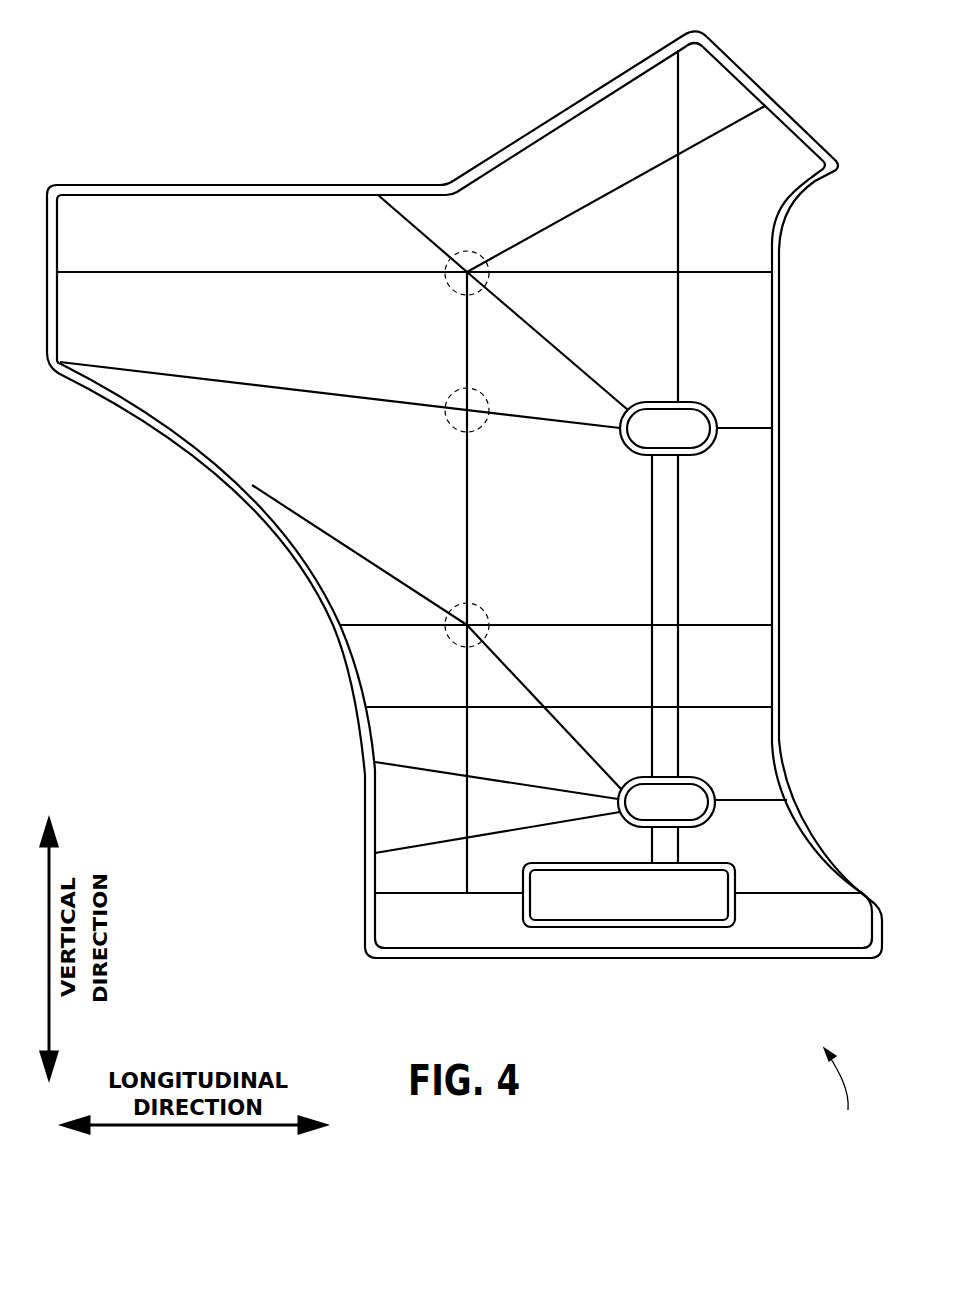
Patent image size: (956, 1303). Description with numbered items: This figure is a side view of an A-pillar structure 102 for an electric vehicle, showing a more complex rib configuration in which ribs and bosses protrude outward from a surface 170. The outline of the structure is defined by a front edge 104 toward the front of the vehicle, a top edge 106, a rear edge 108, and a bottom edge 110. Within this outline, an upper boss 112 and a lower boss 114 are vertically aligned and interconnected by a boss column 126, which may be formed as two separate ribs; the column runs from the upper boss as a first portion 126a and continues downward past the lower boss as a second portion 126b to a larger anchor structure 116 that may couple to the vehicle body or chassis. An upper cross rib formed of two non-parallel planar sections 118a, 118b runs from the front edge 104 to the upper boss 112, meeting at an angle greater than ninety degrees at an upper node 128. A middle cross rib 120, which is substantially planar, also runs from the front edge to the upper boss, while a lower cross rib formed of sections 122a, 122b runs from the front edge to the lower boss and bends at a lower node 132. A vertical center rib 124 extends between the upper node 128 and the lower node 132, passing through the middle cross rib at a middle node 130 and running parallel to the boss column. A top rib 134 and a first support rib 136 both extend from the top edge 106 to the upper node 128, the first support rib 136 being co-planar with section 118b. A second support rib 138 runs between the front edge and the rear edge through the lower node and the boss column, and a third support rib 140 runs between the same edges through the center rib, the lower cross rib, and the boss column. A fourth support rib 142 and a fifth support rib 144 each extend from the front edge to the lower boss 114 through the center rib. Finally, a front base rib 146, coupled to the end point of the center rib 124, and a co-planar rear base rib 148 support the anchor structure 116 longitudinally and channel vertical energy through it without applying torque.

The A-pillar structure 102 is at (844, 1093).
The front edge 104 is at (337, 640).
The top edge 106 is at (418, 185).
The rear edge 108 is at (786, 375).
The bottom edge 110 is at (655, 960).
The upper boss 112 is at (706, 402).
The lower boss 114 is at (708, 778).
The anchor structure 116 is at (735, 880).
The section of upper cross rib 118a is at (247, 271).
The section of upper cross rib 118b is at (533, 325).
The middle cross rib 120 is at (332, 392).
The section of lower cross rib 122a is at (350, 548).
The section of lower cross rib 122b is at (552, 700).
The center rib 124 is at (468, 518).
The boss column 126 is at (682, 212).
The boss column 126a is at (653, 557).
The boss column 126b is at (652, 836).
The upper node 128 is at (450, 285).
The middle node 130 is at (447, 420).
The lower node 132 is at (450, 637).
The top rib 134 is at (613, 190).
The first support rib 136 is at (428, 238).
The second support rib 138 is at (548, 624).
The third support rib 140 is at (721, 707).
The fourth support rib 142 is at (508, 781).
The fifth support rib 144 is at (420, 845).
The front base rib 146 is at (503, 895).
The rear base rib 148 is at (808, 895).
The surface 170 is at (432, 931).